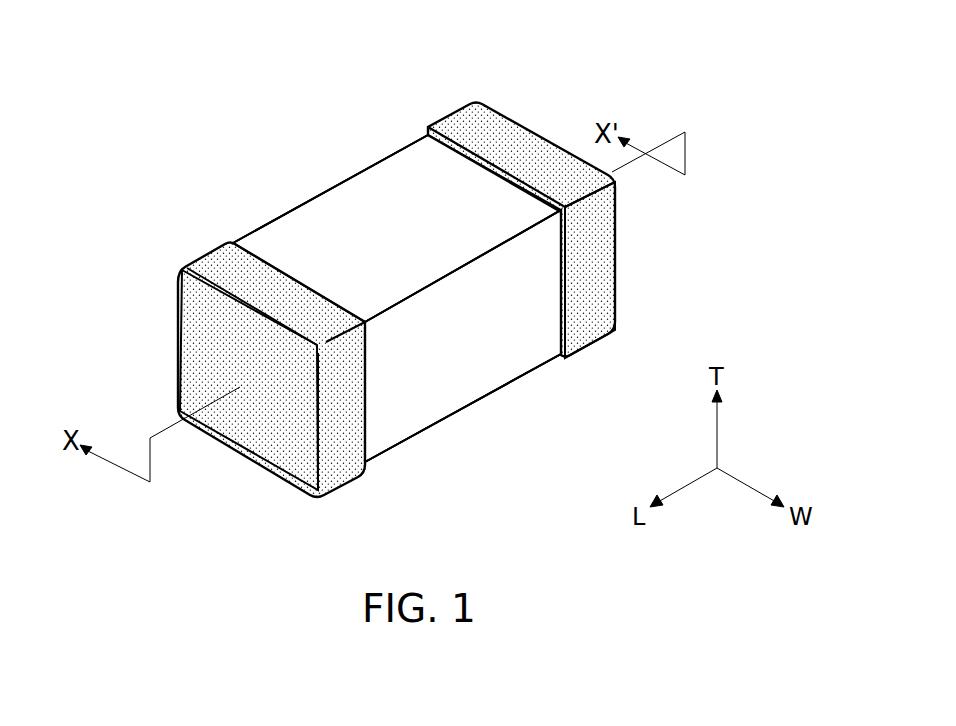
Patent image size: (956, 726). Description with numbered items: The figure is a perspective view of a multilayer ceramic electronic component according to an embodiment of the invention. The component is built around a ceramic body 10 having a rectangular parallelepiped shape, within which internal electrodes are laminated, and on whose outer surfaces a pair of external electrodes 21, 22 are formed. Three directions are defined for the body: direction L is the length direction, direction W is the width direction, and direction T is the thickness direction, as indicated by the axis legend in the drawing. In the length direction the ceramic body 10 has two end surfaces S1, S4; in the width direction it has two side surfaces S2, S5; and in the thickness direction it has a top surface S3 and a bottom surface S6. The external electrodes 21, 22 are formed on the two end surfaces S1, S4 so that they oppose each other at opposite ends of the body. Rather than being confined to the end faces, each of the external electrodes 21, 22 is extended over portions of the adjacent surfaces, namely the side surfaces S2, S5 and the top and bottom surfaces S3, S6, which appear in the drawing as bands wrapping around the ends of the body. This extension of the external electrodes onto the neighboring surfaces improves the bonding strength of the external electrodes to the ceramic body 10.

The ceramic body 10 is at (333, 203).
The external electrode 21 is at (210, 263).
The external electrode 22 is at (458, 120).
The end surface S1 is at (290, 470).
The side surface S2 is at (465, 387).
The top surface S3 is at (392, 168).
The end surface S4 is at (617, 260).
The side surface S5 is at (290, 215).
The bottom surface S6 is at (422, 433).